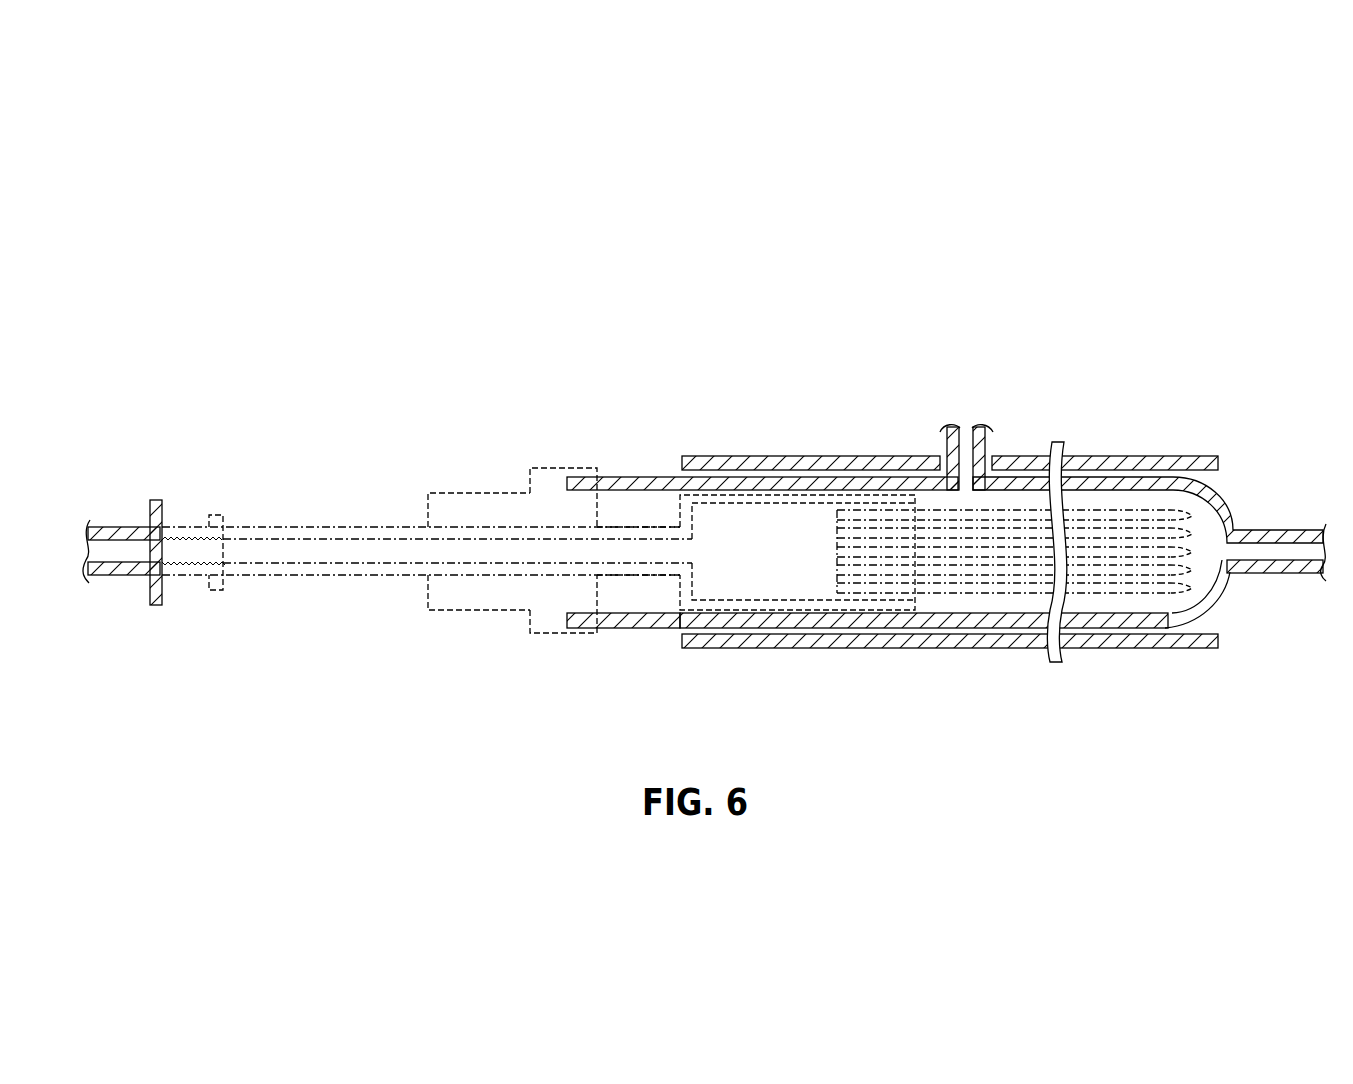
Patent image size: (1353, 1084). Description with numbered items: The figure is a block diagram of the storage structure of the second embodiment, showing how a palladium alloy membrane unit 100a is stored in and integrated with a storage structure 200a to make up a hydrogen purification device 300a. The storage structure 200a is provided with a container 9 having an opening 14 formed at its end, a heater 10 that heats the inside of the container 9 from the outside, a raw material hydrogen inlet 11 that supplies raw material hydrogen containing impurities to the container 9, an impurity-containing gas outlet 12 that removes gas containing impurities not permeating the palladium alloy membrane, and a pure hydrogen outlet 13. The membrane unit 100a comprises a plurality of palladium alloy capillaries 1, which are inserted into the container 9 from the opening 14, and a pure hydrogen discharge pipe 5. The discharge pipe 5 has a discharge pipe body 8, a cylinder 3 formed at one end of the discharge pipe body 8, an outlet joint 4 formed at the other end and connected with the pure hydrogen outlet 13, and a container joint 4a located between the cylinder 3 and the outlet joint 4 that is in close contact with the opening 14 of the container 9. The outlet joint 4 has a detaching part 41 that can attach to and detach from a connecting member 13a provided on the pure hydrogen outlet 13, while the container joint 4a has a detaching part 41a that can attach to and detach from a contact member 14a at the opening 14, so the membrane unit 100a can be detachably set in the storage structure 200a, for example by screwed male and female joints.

The hydrogen purification device 300a is at (767, 288).
The storage structure 200a is at (691, 445).
The palladium alloy membrane unit 100a is at (292, 468).
The pure hydrogen outlet 13 is at (95, 527).
The connecting member 13a is at (168, 540).
The detaching part 41 is at (150, 577).
The outlet joint 4 is at (217, 590).
The container joint 4a is at (475, 493).
The detaching part 41a is at (580, 495).
The pure hydrogen discharge pipe 5 is at (300, 527).
The discharge pipe body 8 is at (377, 575).
The opening 14 is at (618, 627).
The contact member 14a is at (580, 627).
The heater 10 is at (750, 470).
The cylinder 3 is at (824, 476).
The impurity-containing gas outlet 12 is at (990, 465).
The palladium alloy capillaries 1 is at (982, 595).
The container 9 is at (1228, 518).
The raw material hydrogen inlet 11 is at (1233, 550).